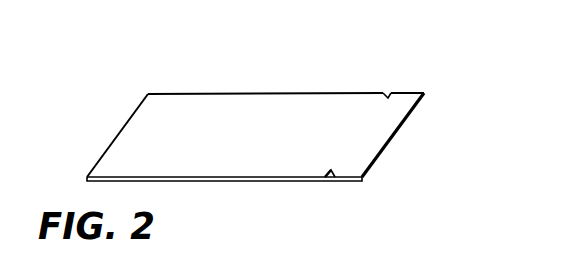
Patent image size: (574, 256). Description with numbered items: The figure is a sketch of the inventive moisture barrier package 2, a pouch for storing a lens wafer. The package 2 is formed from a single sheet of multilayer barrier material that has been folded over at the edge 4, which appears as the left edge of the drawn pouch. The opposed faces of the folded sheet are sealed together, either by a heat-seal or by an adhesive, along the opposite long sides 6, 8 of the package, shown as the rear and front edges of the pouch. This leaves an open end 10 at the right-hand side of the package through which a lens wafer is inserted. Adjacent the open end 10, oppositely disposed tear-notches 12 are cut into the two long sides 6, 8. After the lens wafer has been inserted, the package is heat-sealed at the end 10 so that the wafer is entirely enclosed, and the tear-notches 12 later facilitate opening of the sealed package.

The moisture barrier package 2 is at (180, 50).
The edge 4 is at (124, 127).
The long side 6 is at (319, 93).
The long side 8 is at (270, 181).
The open end 10 is at (411, 110).
The tear-notches 12 is at (388, 95).